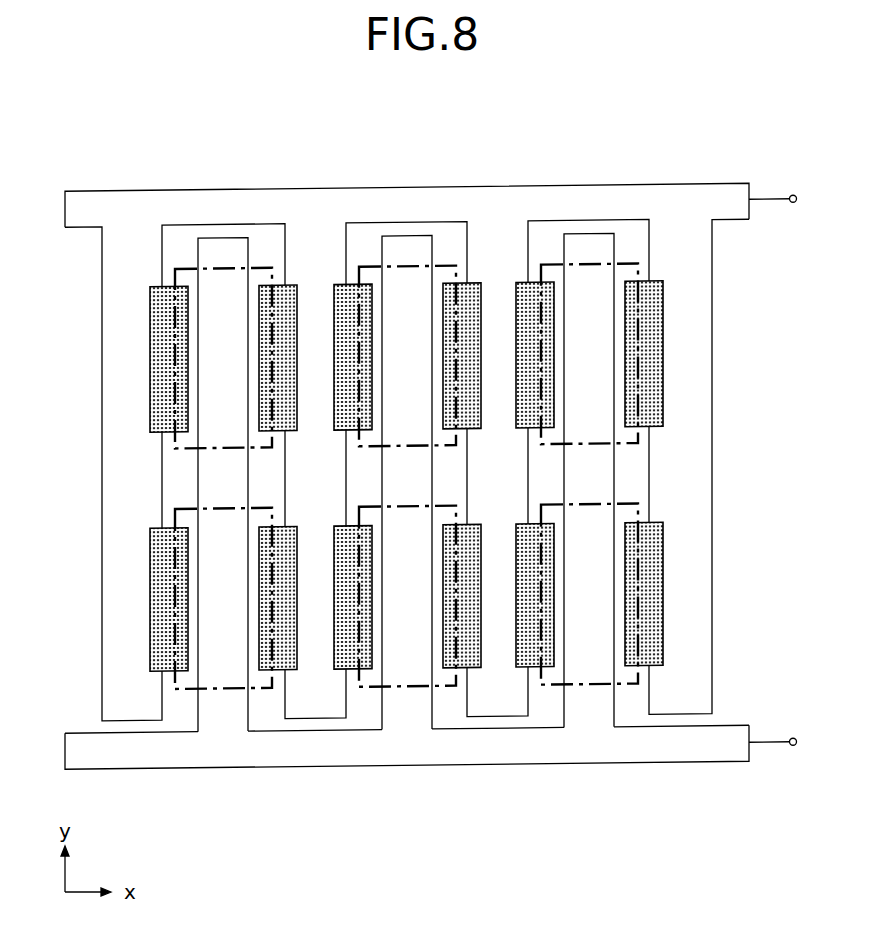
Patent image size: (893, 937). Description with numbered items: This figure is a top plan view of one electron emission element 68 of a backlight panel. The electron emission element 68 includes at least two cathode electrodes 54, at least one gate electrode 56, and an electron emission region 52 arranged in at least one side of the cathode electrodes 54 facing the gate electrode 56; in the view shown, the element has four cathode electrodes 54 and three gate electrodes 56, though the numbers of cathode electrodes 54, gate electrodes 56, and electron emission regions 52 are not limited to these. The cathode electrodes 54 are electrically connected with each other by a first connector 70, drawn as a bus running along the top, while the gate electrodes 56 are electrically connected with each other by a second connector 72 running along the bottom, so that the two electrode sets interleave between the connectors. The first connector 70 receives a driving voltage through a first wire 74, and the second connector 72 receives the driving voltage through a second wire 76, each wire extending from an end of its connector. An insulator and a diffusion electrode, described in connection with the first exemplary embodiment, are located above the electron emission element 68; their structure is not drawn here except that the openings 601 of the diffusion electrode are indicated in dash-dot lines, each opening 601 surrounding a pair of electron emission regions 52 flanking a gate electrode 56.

The electron emission element 68 is at (529, 164).
The first connector 70 is at (220, 205).
The second connector 72 is at (318, 753).
The cathode electrode 54 is at (125, 359).
The gate electrode 56 is at (222, 487).
The electron emission region 52 is at (162, 598).
The opening of the diffusion electrode 601 is at (590, 686).
The first wire 74 is at (768, 196).
The second wire 76 is at (771, 748).